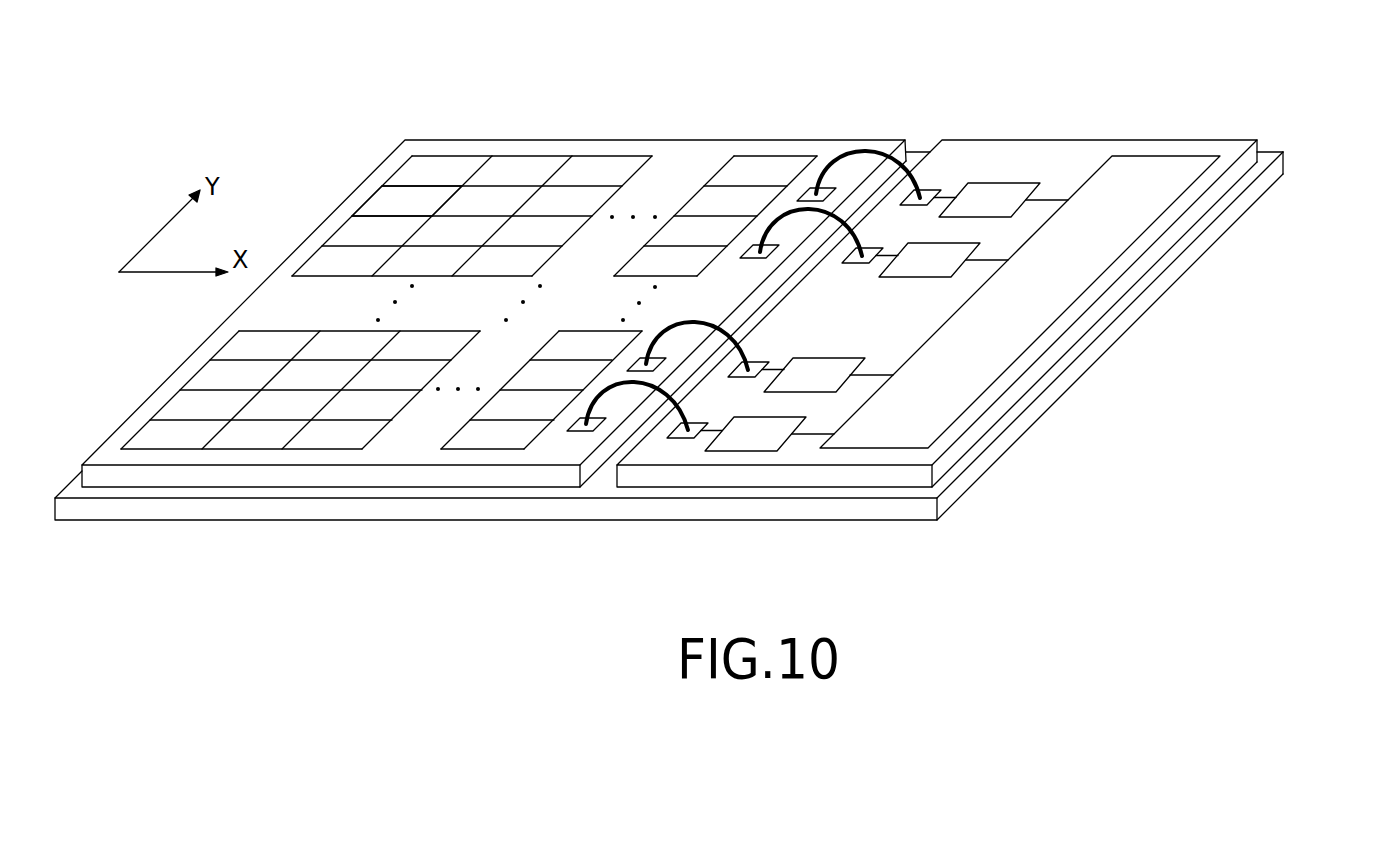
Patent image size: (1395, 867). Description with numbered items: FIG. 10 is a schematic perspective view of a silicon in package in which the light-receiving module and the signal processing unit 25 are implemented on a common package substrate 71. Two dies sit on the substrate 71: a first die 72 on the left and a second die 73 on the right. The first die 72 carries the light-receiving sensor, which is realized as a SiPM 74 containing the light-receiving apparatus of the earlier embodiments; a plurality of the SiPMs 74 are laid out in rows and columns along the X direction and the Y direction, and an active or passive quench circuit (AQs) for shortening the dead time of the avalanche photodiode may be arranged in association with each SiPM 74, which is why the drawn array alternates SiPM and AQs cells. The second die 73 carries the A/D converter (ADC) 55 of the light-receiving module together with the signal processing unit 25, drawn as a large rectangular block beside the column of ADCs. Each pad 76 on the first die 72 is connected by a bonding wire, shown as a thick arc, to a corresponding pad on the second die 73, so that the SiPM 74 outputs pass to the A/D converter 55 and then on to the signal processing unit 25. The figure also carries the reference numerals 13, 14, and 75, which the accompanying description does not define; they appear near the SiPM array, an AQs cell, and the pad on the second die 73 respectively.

The SiPM photodetector array 13 is at (472, 157).
The AQs active quenching circuit 14 is at (373, 203).
The signal processing unit 25 is at (1150, 170).
The A/D converter 55 is at (1000, 183).
The substrate 71 is at (1035, 410).
The first die 72 is at (692, 153).
The second die 73 is at (1080, 152).
The SiPM 74 is at (823, 182).
The processing board pad 75 is at (945, 186).
The pad 76 is at (880, 152).